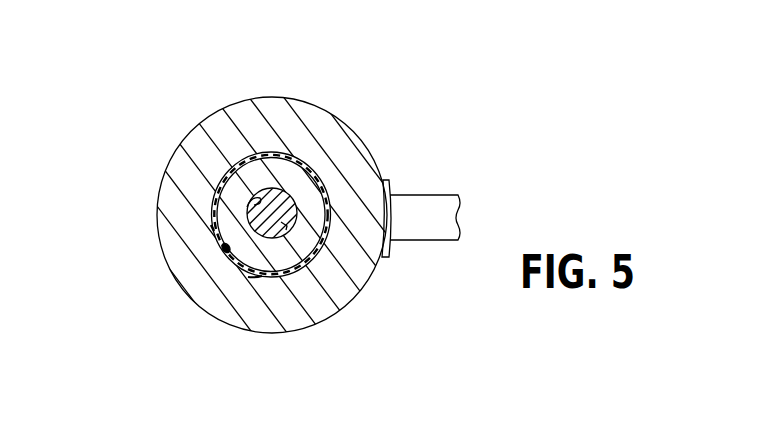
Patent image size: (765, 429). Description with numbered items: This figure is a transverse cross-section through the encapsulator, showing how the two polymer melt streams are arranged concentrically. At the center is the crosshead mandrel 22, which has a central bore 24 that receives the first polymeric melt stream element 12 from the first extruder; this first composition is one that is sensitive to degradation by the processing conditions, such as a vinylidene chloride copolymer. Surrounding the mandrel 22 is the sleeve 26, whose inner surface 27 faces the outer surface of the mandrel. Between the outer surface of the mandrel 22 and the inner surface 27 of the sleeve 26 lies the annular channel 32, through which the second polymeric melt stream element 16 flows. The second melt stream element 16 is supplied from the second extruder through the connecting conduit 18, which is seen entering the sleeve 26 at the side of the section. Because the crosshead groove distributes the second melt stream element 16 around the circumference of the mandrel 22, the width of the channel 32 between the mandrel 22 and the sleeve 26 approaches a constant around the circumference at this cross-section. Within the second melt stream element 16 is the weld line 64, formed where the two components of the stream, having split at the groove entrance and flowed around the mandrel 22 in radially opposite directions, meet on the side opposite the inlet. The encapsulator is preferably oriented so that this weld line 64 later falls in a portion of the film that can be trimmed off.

The first polymeric melt stream element 12 is at (287, 226).
The second polymeric melt stream element 16 is at (298, 162).
The connecting conduit 18 is at (440, 194).
The crosshead mandrel 22 is at (299, 166).
The central bore 24 is at (218, 196).
The sleeve 26 is at (263, 96).
The inner surface 27 is at (228, 250).
The annular channel 32 is at (256, 276).
The weld line 64 is at (247, 207).